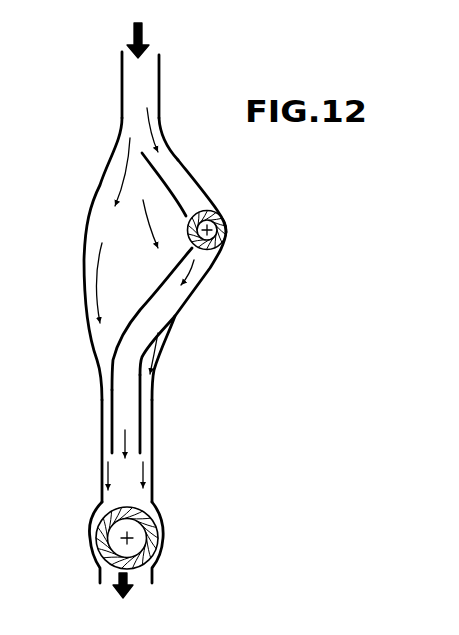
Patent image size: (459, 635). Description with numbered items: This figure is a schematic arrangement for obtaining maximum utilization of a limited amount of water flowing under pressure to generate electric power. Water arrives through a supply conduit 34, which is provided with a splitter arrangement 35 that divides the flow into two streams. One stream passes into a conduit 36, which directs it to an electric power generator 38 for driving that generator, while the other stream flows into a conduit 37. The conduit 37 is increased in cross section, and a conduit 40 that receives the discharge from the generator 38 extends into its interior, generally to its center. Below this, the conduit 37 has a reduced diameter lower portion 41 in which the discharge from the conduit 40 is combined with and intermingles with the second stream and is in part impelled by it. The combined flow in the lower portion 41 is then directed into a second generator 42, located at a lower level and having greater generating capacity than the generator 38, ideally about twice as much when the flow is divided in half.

The conduit 34 is at (162, 78).
The splitter arrangement 35 is at (168, 138).
The conduit 36 is at (205, 177).
The conduit 37 is at (82, 245).
The electric power generator 38 is at (228, 228).
The conduit 40 is at (202, 285).
The reduced diameter lower portion 41 is at (155, 482).
The second generator 42 is at (160, 538).